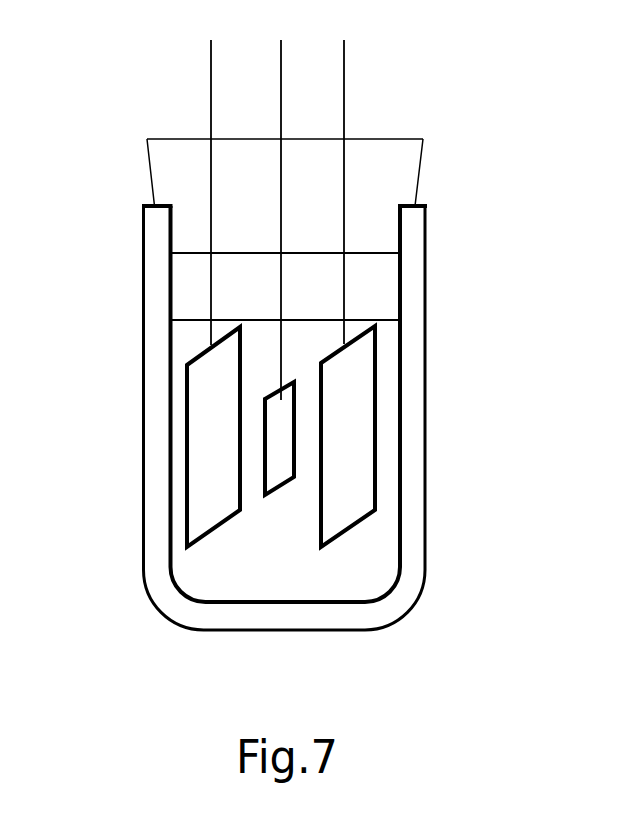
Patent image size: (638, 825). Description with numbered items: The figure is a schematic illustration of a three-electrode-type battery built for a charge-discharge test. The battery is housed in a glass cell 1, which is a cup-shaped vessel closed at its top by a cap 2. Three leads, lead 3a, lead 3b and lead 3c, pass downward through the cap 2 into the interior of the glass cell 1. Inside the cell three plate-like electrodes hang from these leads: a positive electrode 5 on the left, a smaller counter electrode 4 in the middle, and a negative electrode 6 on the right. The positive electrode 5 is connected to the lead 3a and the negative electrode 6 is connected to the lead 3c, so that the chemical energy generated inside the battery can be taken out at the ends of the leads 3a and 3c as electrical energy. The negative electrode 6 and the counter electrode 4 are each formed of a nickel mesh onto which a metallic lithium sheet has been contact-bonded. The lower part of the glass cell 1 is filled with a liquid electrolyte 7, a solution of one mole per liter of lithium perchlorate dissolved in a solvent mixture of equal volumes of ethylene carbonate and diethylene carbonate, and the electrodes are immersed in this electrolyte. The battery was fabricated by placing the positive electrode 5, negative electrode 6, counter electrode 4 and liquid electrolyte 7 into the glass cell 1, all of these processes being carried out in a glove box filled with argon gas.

The glass cell 1 is at (153, 295).
The cap 2 is at (188, 173).
The lead 3a is at (207, 177).
The lead 3b is at (280, 205).
The lead 3c is at (347, 177).
The counter electrode 4 is at (280, 462).
The positive electrode 5 is at (203, 492).
The negative electrode 6 is at (360, 443).
The liquid electrolyte 7 is at (382, 570).